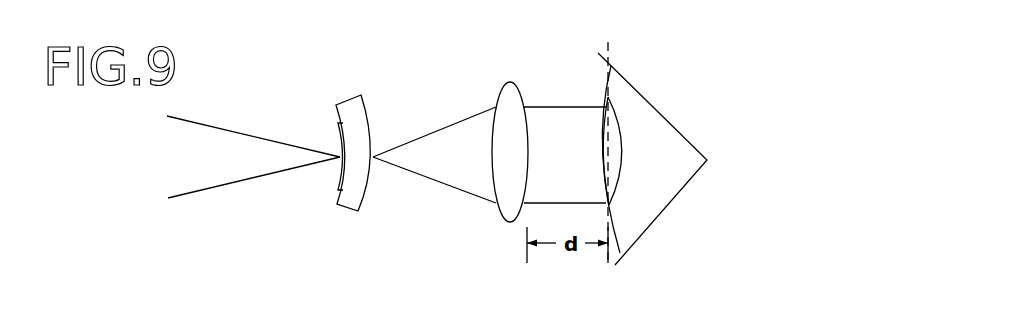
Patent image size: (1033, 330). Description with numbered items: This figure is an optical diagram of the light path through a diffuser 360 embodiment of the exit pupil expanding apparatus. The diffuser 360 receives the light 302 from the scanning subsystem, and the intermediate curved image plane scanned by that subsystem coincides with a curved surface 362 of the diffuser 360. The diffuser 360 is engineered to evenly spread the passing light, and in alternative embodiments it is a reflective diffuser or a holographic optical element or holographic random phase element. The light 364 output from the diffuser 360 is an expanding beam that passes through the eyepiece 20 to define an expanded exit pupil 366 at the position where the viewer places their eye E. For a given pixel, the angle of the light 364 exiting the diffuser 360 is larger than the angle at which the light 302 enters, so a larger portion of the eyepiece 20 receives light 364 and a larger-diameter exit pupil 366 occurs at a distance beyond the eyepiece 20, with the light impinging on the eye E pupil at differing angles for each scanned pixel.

The light 302 is at (233, 167).
The diffuser 360 is at (362, 80).
The curved surface 362 is at (343, 186).
The light 364 is at (476, 167).
The eyepiece 20 is at (508, 82).
The eye E is at (652, 107).
The expanded exit pupil 366 is at (608, 148).